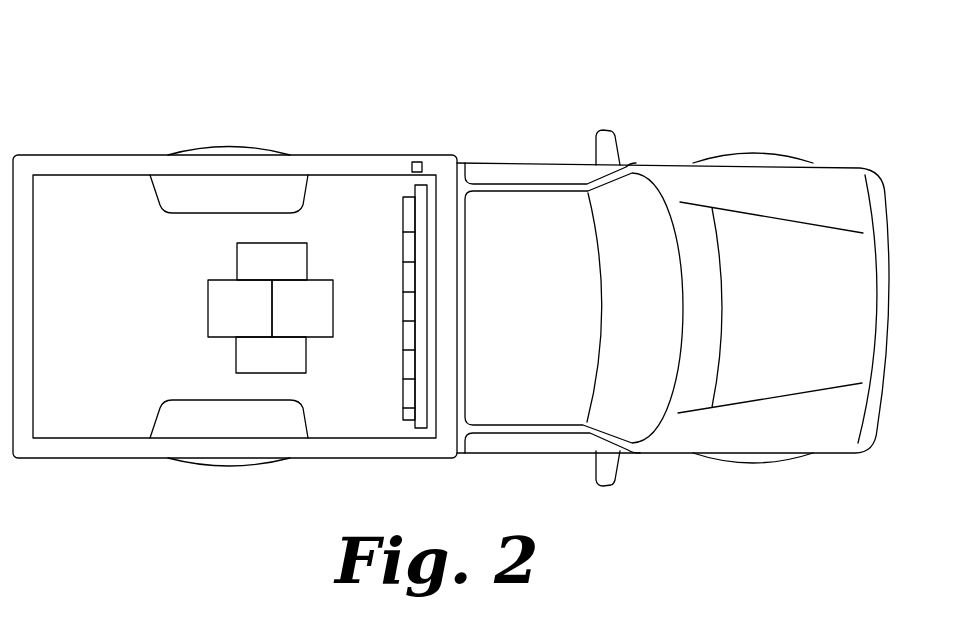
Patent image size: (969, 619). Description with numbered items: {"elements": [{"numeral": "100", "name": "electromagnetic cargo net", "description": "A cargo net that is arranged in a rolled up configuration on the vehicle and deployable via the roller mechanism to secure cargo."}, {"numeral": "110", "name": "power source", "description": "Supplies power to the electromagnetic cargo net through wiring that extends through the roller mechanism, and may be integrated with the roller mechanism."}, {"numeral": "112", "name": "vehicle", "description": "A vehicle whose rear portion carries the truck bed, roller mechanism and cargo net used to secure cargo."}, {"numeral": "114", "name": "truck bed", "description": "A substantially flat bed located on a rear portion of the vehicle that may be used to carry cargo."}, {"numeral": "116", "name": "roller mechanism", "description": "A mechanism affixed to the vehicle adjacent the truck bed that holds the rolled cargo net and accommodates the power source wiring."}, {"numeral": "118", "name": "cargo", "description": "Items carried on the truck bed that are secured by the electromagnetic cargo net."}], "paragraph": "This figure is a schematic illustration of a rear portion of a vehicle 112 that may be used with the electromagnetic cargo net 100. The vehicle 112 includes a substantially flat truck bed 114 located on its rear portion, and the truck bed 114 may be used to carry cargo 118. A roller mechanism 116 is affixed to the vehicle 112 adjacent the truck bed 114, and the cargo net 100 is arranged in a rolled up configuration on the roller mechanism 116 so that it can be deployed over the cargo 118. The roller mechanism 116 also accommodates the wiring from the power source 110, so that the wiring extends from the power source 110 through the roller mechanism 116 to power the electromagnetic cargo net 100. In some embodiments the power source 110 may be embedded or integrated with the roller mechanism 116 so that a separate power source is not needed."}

The sensor module assembly 100 is at (410, 280).
The sensor 110 is at (417, 162).
The vehicle 112 is at (78, 80).
The cargo bed 114 is at (132, 286).
The front wall of cargo bed 116 is at (422, 338).
The cargo items 118 is at (227, 307).